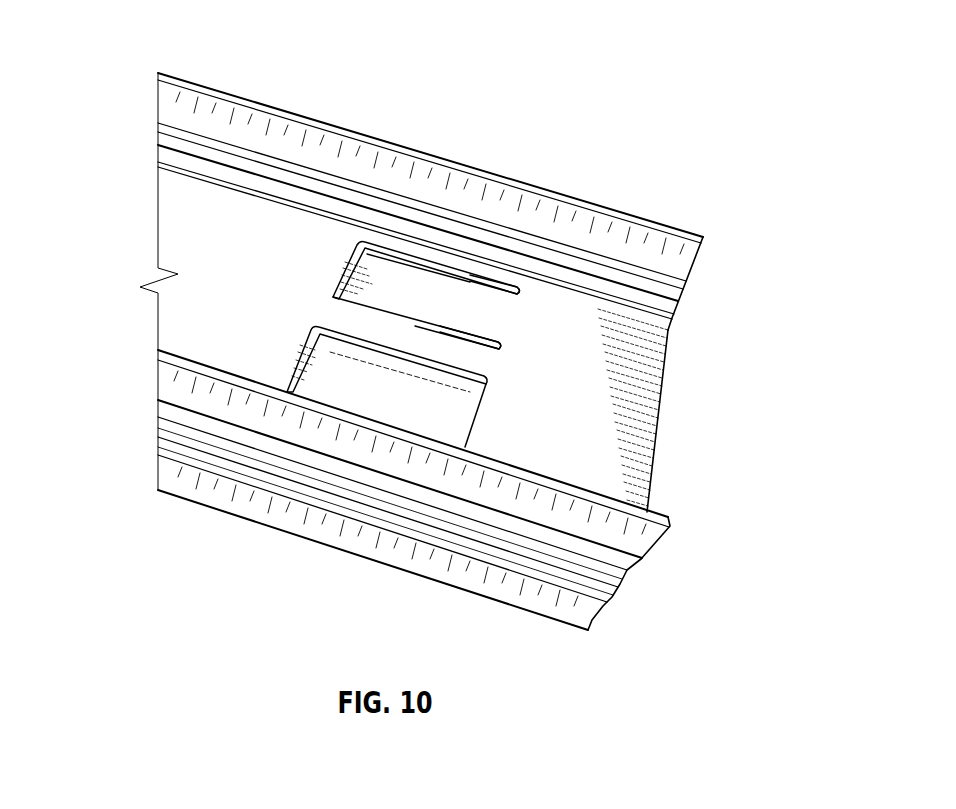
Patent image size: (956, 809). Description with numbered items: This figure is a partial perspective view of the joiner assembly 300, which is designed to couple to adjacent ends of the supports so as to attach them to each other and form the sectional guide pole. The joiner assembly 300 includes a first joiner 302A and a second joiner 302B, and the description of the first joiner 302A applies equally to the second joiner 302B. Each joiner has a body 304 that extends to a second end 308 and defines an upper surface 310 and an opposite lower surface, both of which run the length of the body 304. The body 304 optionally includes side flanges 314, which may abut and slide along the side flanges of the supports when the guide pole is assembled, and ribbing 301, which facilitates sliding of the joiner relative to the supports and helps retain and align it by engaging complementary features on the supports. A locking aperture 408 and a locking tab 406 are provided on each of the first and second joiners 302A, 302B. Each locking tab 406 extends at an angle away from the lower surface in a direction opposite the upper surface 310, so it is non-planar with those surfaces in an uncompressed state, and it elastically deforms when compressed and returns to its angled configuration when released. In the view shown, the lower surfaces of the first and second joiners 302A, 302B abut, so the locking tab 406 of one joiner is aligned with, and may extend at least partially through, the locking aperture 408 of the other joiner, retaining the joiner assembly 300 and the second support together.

The joiner assembly 300 is at (710, 175).
The ribbing 301 is at (640, 574).
The first joiner 302A is at (677, 256).
The second joiner 302B is at (603, 617).
The body 304 is at (174, 212).
The second end 308 is at (660, 397).
The upper surface 310 is at (327, 231).
The side flanges 314 is at (527, 184).
The locking tab 406 is at (433, 403).
The locking aperture 408 is at (300, 347).